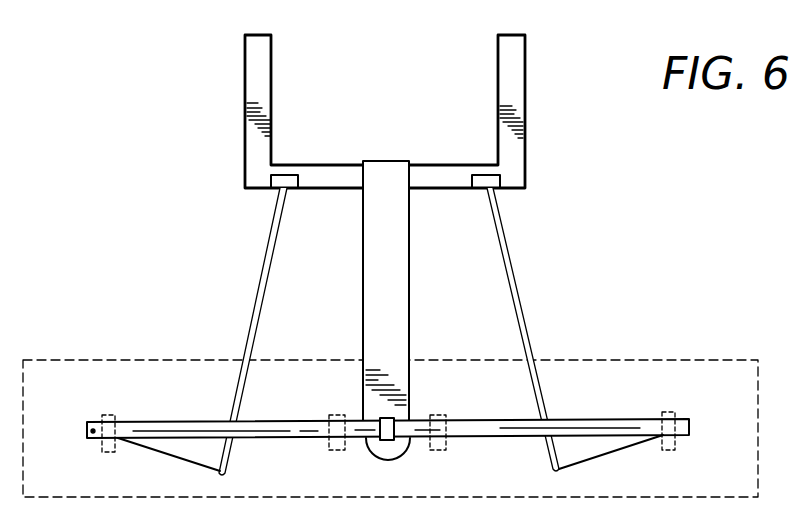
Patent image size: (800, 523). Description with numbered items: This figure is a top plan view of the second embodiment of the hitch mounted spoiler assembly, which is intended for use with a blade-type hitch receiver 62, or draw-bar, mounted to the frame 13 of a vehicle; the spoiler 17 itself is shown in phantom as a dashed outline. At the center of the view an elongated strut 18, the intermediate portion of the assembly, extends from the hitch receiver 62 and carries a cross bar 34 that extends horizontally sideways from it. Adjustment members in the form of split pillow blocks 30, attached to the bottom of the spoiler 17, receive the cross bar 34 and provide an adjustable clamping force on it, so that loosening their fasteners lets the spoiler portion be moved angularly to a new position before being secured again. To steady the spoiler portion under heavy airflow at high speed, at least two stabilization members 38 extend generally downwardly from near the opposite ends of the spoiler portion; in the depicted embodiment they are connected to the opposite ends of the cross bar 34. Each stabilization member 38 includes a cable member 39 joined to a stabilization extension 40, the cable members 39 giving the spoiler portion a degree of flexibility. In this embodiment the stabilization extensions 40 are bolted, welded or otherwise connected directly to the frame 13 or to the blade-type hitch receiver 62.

The frame 13 is at (513, 80).
The spoiler 17 is at (64, 469).
The elongated strut 18 is at (392, 432).
The split pillow block 30 is at (668, 412).
The cross bar 34 is at (300, 440).
The stabilization members 38 is at (122, 290).
The cable members 39 is at (150, 450).
The stabilization extensions 40 is at (258, 275).
The blade-type hitch receiver 62 is at (393, 283).